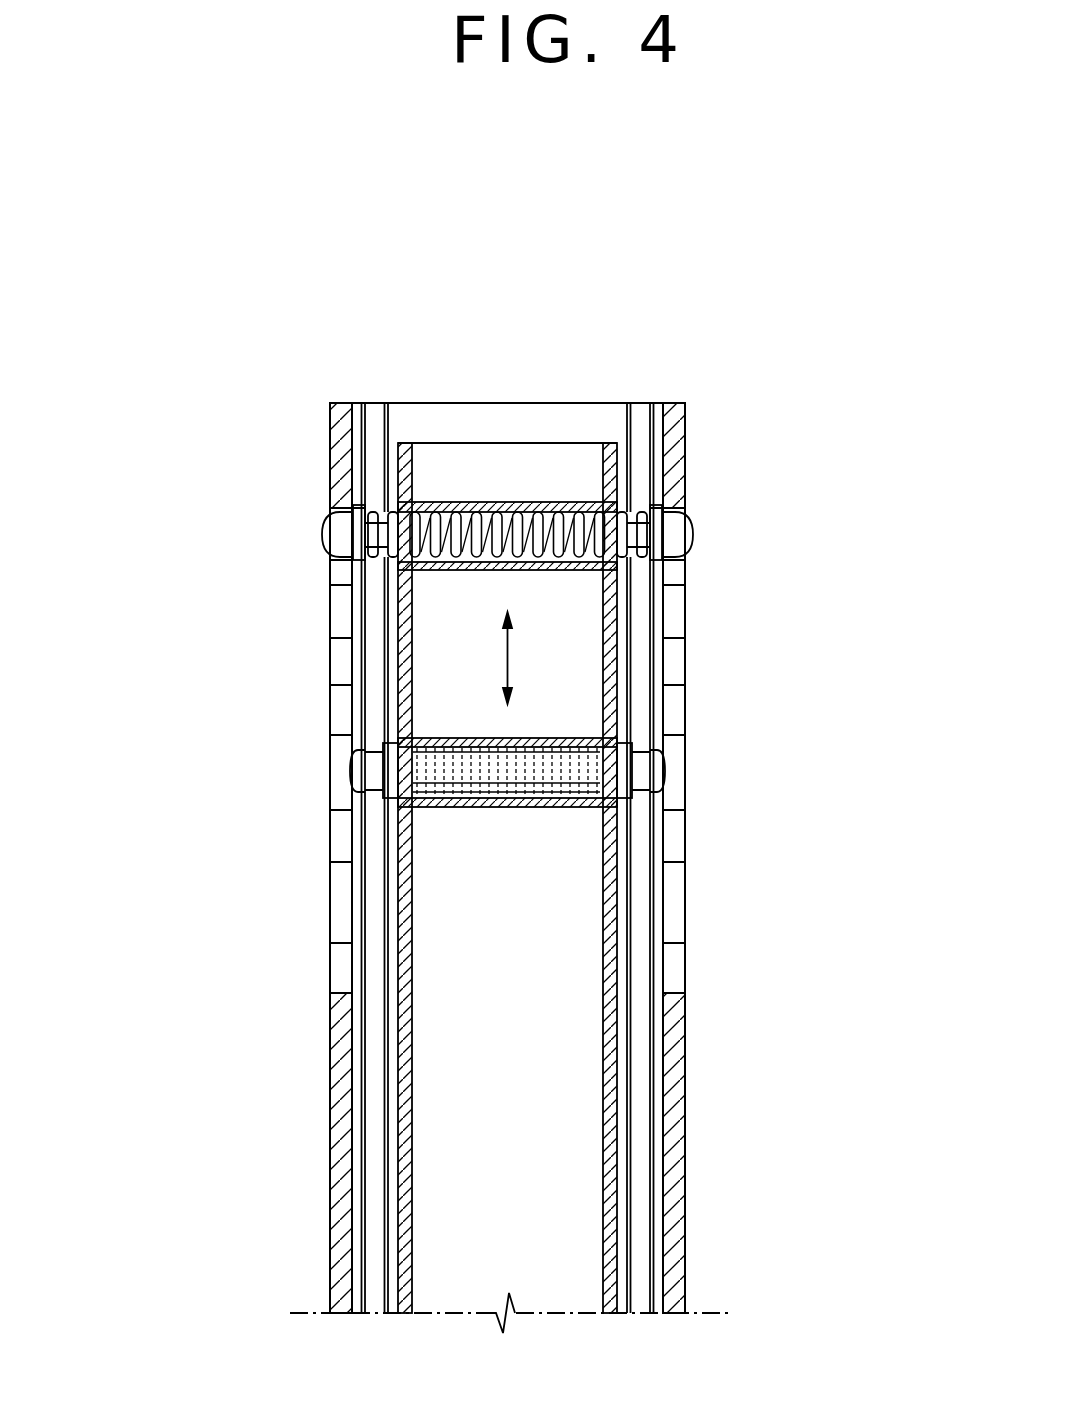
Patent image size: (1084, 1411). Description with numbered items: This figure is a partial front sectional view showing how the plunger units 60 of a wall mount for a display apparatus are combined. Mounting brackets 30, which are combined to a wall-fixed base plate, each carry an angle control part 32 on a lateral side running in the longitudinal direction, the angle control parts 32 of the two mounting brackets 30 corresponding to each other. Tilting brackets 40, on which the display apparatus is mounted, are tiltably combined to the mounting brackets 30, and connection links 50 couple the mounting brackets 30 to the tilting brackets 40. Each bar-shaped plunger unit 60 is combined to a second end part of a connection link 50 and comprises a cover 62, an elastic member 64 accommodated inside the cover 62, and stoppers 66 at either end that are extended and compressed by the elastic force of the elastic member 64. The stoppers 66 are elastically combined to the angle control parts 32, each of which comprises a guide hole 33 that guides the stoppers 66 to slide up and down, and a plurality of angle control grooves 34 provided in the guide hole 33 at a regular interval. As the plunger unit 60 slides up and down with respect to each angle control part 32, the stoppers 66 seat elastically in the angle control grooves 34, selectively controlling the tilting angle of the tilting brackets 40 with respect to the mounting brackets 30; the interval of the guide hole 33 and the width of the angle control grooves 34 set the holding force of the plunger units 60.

The mounting bracket 30 is at (700, 1118).
The angle control part 32 is at (217, 692).
The guide hole 33 is at (332, 757).
The angle control grooves 34 is at (332, 965).
The tilting bracket 40 is at (360, 1137).
The connection link 50 is at (380, 1072).
The plunger unit 60 is at (397, 298).
The cover 62 is at (452, 502).
The elastic member 64 is at (537, 512).
The stoppers 66 is at (338, 530).